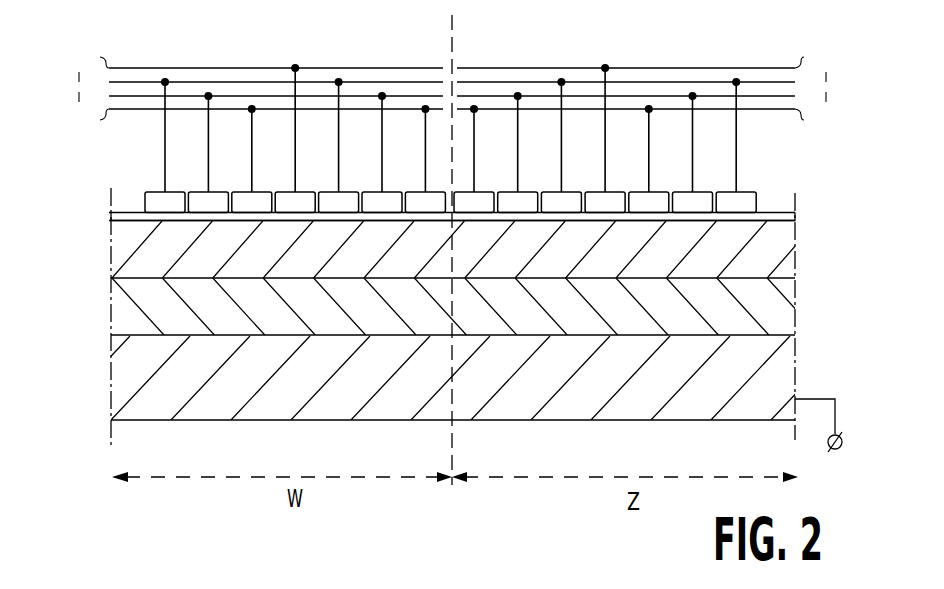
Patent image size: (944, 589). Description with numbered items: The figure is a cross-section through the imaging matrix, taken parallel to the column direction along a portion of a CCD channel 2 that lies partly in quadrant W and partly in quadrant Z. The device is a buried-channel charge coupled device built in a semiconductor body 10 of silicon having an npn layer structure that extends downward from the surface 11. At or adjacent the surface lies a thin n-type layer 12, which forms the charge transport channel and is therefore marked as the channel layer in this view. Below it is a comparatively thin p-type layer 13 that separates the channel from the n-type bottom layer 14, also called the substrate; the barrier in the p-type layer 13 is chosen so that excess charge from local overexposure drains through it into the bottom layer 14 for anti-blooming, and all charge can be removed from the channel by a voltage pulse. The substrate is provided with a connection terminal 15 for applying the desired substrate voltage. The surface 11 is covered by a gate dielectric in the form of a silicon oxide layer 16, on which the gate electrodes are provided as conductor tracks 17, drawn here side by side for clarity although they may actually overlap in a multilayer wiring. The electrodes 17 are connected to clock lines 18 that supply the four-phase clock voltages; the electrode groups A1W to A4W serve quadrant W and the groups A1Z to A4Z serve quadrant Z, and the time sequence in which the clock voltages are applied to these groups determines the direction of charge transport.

The semiconductor body 10 is at (822, 308).
The surface 11 is at (780, 208).
The n-type layer 12 is at (118, 248).
The CCD channel 2 is at (435, 250).
The p-type layer 13 is at (119, 307).
The n-type bottom layer 14 is at (124, 388).
The connection terminal 15 is at (840, 450).
The silicon oxide layer 16 is at (790, 215).
The conductor tracks 17 is at (148, 192).
The clock lines 18 is at (453, 104).
The electrode A1W is at (253, 120).
The electrode A4W is at (253, 54).
The electrode A1Z is at (650, 57).
The electrode A4Z is at (650, 123).